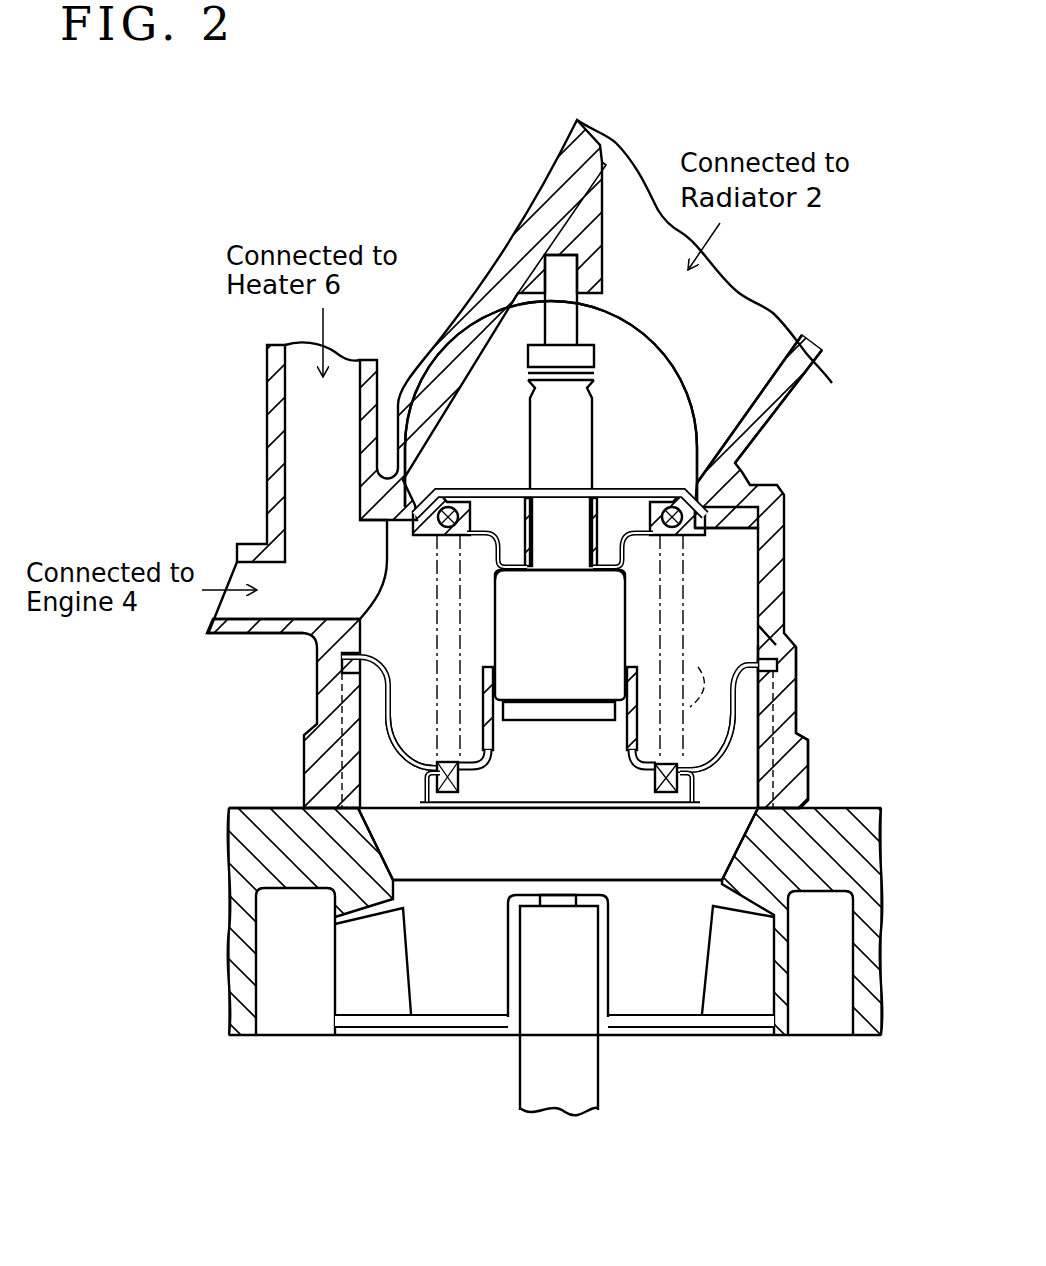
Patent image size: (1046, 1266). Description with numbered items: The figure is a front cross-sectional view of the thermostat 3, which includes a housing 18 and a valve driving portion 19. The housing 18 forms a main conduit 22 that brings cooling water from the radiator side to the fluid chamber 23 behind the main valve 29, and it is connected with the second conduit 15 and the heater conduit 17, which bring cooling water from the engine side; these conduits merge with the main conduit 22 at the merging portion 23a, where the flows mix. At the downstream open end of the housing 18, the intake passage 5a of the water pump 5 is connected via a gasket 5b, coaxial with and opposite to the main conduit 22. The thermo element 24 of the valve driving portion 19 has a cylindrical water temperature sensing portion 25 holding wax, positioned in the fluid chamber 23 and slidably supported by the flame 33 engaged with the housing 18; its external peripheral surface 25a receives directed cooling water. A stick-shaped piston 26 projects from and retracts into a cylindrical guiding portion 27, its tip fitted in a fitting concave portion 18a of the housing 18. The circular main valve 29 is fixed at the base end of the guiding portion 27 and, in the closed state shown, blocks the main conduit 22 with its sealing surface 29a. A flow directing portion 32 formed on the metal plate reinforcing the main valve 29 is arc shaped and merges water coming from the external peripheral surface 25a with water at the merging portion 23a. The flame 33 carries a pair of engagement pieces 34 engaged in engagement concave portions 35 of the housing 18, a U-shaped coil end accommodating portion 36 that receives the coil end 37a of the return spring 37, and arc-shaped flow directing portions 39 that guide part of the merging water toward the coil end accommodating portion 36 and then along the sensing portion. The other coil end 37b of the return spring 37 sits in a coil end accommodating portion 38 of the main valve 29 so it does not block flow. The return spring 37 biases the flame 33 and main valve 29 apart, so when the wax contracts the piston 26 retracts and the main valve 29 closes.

The thermostat 3 is at (413, 205).
The water pump 5 is at (739, 1052).
The intake passage 5a is at (626, 865).
The gasket 5b is at (324, 812).
The second conduit 15 is at (243, 607).
The heater conduit 17 is at (305, 425).
The housing 18 is at (450, 333).
The fitting concave portion 18a is at (572, 270).
The valve driving portion 19 is at (713, 794).
The main conduit 22 is at (764, 418).
The fluid chamber behind the main valve 23 is at (742, 593).
The merging portion 23a is at (381, 634).
The thermo element 24 is at (533, 728).
The water temperature sensing portion 25 is at (612, 597).
The external peripheral surface 25a is at (580, 690).
The piston 26 is at (575, 327).
The guiding portion 27 is at (580, 410).
The main valve 29 is at (503, 487).
The sealing surface 29a is at (425, 490).
The flow directing portion 32 is at (501, 581).
The flame 33 is at (562, 798).
The engagement piece 34 is at (378, 659).
The engagement concave portion 35 is at (322, 652).
The coil end accommodating portion 36 is at (440, 798).
The return spring 37 is at (702, 669).
The coil end 37a is at (463, 800).
The coil end 37b is at (440, 537).
The coil end accommodating portion 38 is at (450, 506).
The flow directing portion 39 is at (391, 750).